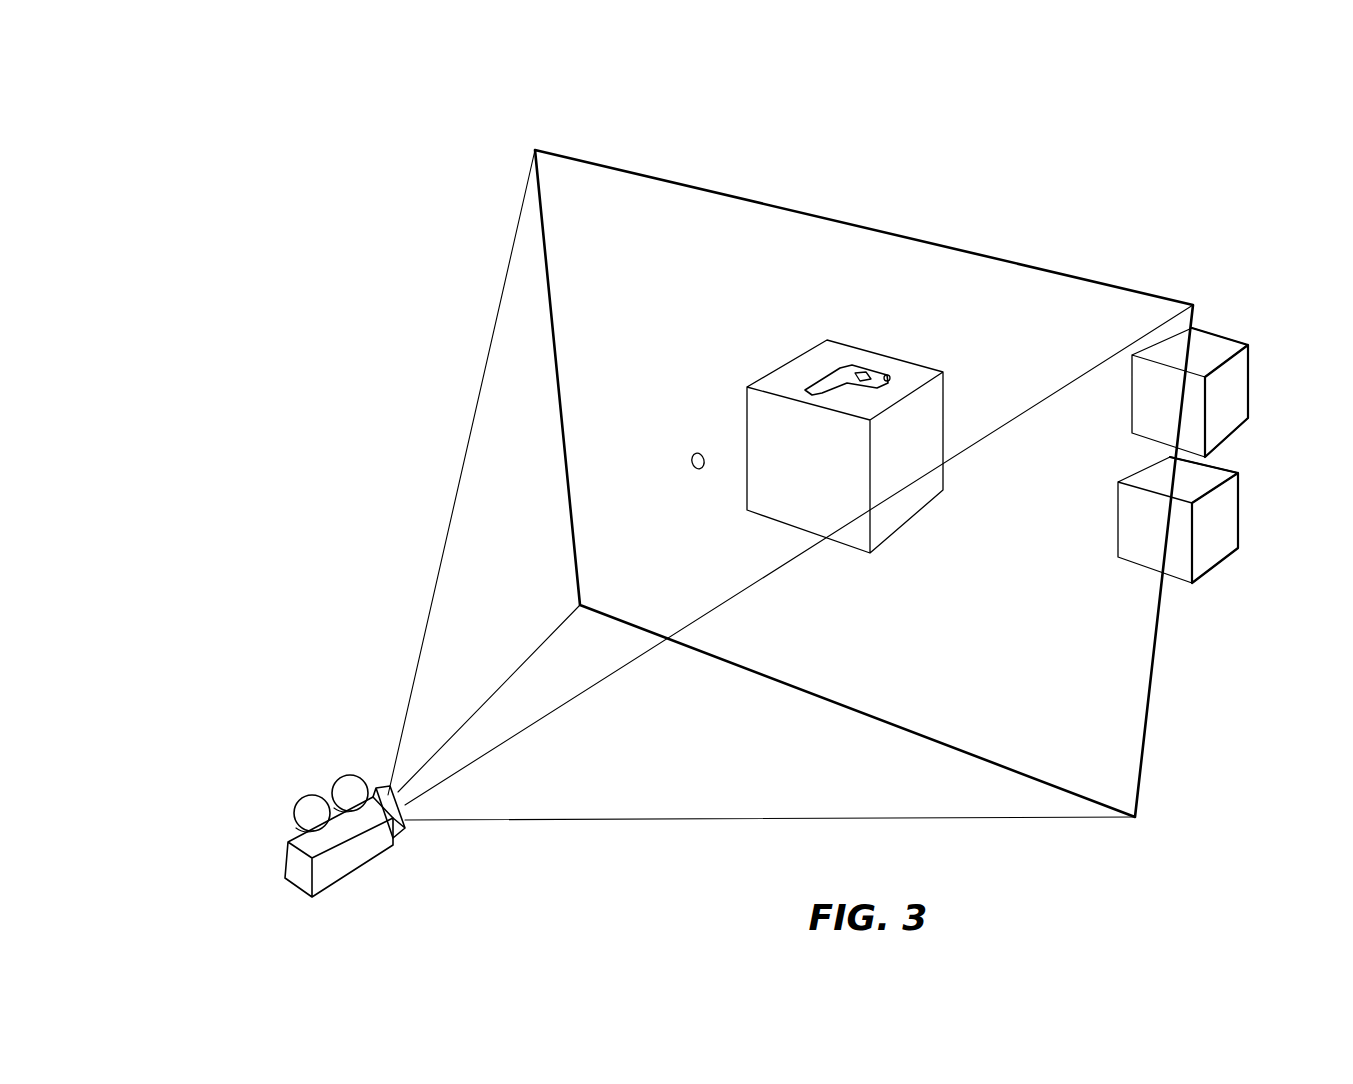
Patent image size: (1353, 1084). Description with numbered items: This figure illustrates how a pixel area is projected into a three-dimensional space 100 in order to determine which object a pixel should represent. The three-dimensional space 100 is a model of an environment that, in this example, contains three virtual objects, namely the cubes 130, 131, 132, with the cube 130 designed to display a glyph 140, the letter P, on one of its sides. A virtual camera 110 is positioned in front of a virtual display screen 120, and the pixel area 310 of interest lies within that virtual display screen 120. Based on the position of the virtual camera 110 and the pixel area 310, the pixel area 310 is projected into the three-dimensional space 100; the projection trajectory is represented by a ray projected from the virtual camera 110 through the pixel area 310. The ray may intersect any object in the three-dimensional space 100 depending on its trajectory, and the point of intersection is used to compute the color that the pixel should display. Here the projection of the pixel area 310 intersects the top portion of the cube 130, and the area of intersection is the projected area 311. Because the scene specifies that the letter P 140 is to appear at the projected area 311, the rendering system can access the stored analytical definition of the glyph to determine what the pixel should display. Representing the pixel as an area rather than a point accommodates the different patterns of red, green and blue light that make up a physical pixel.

The 3D space 100 is at (893, 84).
The virtual camera 110 is at (288, 846).
The virtual display screen 120 is at (533, 152).
The cube 130 is at (832, 442).
The cube 131 is at (1130, 434).
The cube 132 is at (1116, 558).
The glyph 140 is at (849, 367).
The pixel area 310 is at (691, 455).
The projected area 311 is at (892, 378).